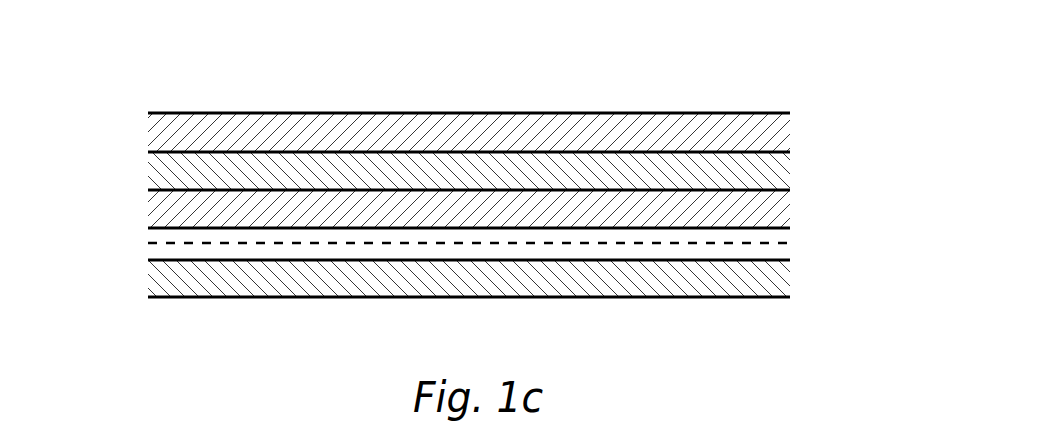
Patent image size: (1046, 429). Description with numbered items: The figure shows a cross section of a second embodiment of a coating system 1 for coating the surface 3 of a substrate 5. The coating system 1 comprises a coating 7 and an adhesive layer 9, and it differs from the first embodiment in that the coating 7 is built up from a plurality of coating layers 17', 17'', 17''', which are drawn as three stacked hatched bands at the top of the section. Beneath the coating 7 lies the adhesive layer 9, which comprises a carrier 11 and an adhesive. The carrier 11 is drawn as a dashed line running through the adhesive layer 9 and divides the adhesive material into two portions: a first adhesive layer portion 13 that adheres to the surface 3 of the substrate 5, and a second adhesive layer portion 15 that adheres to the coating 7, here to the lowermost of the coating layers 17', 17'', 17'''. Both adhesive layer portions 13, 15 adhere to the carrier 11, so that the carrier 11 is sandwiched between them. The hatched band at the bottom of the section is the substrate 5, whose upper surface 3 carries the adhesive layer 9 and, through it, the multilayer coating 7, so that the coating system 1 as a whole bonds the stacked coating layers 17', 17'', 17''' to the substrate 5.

The coating system 1 is at (56, 230).
The surface 3 is at (750, 252).
The substrate 5 is at (183, 273).
The coating 7 is at (128, 168).
The adhesive layer 9 is at (820, 232).
The carrier 11 is at (503, 243).
The first adhesive layer portion 13 is at (395, 255).
The second adhesive layer portion 15 is at (293, 232).
The coating layer 17' is at (522, 173).
The coating layer 17'' is at (525, 132).
The coating layer 17''' is at (529, 88).